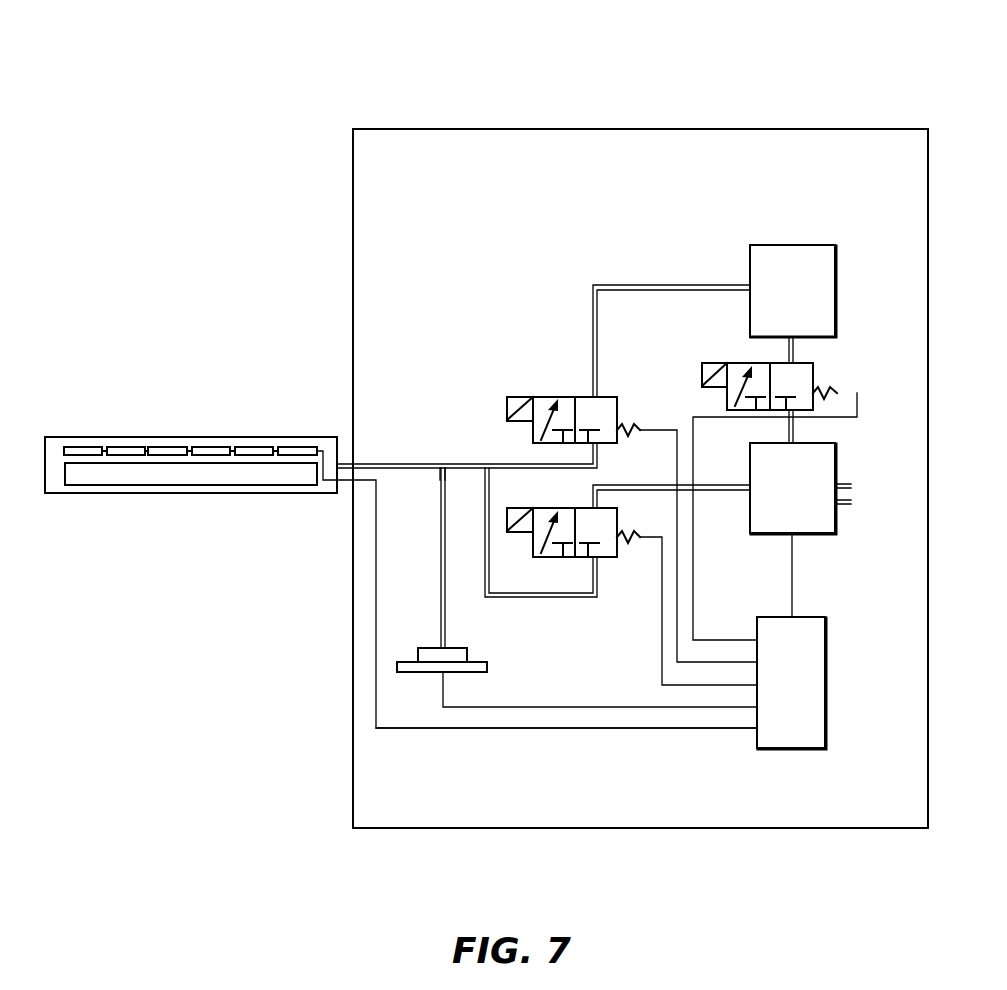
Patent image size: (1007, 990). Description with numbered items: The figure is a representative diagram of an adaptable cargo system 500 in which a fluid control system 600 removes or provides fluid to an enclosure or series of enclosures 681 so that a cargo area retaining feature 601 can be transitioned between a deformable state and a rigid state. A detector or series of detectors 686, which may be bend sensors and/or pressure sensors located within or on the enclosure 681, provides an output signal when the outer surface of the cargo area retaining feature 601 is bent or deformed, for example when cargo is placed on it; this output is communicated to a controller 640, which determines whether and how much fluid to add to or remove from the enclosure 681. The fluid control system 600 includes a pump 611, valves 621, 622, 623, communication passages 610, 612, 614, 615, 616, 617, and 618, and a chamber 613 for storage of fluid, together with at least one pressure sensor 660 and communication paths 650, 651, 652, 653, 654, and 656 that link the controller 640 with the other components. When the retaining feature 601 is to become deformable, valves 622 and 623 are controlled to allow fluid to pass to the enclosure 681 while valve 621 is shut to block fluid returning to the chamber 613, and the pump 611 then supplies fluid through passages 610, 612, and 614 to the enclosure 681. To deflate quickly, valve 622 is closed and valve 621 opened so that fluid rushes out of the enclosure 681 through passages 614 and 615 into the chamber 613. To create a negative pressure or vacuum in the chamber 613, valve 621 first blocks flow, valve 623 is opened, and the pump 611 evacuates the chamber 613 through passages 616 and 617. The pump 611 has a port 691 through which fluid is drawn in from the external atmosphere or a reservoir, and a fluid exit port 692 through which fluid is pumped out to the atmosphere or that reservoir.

The adaptable cargo system 500 is at (205, 101).
The fluid control system 600 is at (566, 123).
The cargo area retaining feature 601 is at (171, 393).
The enclosure 681 is at (190, 475).
The detectors 686 is at (253, 445).
The communication passage 614 is at (435, 463).
The communication passage 615 is at (438, 578).
The communication path 654 is at (468, 731).
The pressure sensor 660 is at (455, 656).
The communication path 653 is at (583, 707).
The communication passage 612 is at (548, 598).
The valve 621 is at (566, 394).
The valve 622 is at (566, 505).
The valve 623 is at (745, 360).
The communication passage 618 is at (690, 283).
The communication passage 610 is at (703, 483).
The chamber 613 is at (806, 258).
The communication passage 616 is at (795, 357).
The communication passage 617 is at (795, 437).
The pump 611 is at (802, 507).
The port 691 is at (852, 485).
The fluid exit port 692 is at (852, 502).
The communication path 656 is at (695, 562).
The communication path 651 is at (678, 593).
The communication path 652 is at (661, 621).
The communication path 650 is at (795, 593).
The controller 640 is at (795, 740).